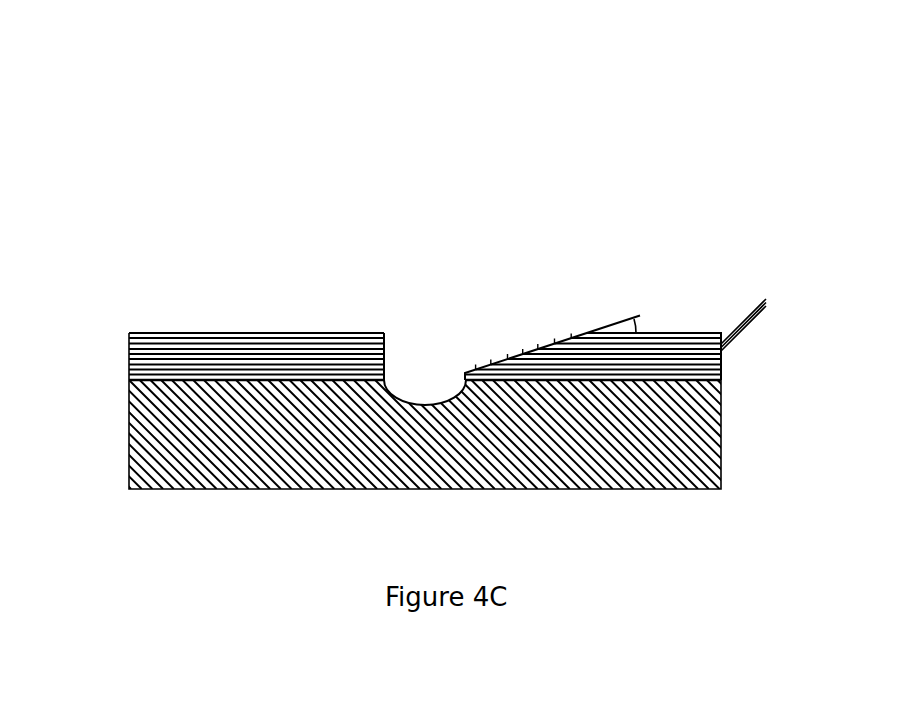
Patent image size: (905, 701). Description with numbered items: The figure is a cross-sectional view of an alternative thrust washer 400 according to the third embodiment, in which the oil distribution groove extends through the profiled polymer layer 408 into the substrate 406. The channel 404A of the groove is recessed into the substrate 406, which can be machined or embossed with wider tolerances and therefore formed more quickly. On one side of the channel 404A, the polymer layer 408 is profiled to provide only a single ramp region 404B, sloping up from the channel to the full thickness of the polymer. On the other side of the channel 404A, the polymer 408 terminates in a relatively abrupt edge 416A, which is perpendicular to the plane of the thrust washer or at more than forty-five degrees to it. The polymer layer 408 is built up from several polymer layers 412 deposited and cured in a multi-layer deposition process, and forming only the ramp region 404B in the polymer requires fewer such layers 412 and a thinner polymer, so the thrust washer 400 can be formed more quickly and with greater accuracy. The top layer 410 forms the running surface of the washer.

The thrust washer 400 is at (243, 90).
The channel 404A is at (417, 298).
The ramp region 404B is at (503, 300).
The substrate 406 is at (230, 463).
The profiled polymer layer 408 is at (117, 325).
The top layer 410 is at (148, 325).
The polymer layers 412 is at (773, 309).
The abrupt edge 416A is at (376, 325).